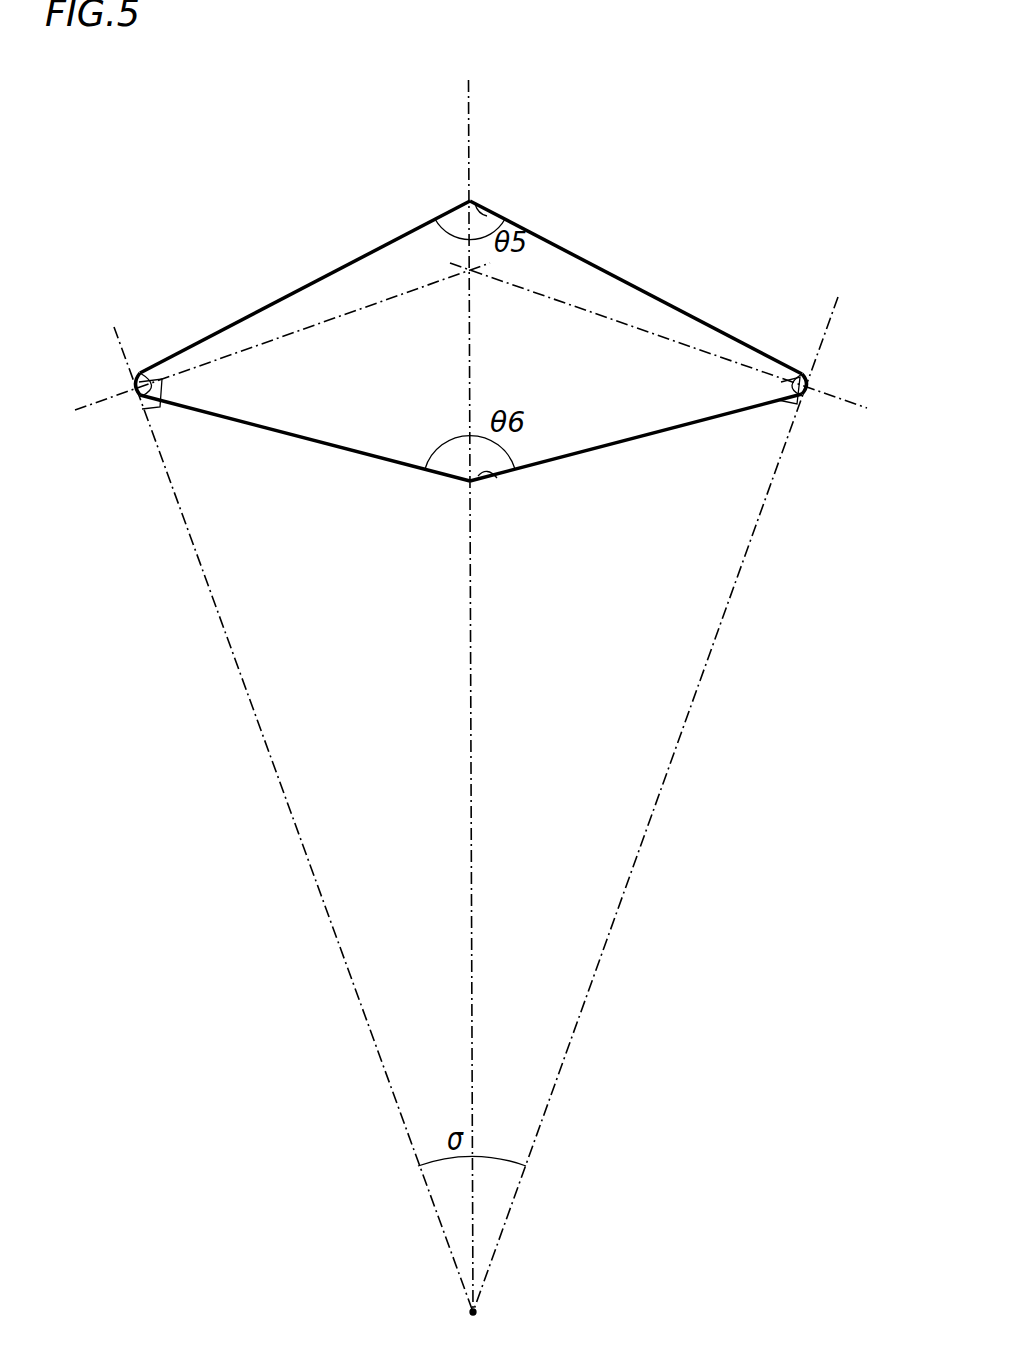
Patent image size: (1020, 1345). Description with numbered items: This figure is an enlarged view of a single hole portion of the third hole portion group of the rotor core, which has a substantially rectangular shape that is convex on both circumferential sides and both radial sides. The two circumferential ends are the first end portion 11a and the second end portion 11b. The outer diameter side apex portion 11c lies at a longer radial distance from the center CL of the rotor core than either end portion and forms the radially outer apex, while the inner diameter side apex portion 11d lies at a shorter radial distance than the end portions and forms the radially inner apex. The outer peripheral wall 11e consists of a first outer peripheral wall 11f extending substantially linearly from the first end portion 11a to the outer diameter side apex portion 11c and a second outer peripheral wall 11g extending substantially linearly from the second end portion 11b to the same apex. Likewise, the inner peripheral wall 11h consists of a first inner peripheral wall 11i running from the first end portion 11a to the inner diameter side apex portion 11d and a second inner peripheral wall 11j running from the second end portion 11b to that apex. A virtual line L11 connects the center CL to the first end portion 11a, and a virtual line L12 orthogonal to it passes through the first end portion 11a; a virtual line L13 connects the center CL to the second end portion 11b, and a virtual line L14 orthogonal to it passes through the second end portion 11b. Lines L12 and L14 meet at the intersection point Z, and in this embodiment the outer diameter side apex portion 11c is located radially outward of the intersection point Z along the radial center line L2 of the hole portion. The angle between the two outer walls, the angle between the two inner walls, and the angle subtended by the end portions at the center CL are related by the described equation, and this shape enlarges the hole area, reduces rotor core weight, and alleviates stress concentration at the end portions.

The first end portion 11a is at (143, 374).
The second end portion 11b is at (792, 372).
The outer diameter side apex portion 11c is at (489, 212).
The inner diameter side apex portion 11d is at (497, 478).
The outer peripheral wall 11e is at (471, 267).
The first outer peripheral wall 11f is at (310, 284).
The second outer peripheral wall 11g is at (643, 296).
The inner peripheral wall 11h is at (471, 466).
The first inner peripheral wall 11i is at (305, 433).
The second inner peripheral wall 11j is at (625, 438).
The center line of rhombus L2 is at (470, 681).
The virtual line L11 is at (281, 800).
The virtual line L12 is at (260, 347).
The virtual line L13 is at (666, 788).
The virtual line L14 is at (682, 347).
The intersection point Z is at (469, 272).
The center CL is at (487, 1316).